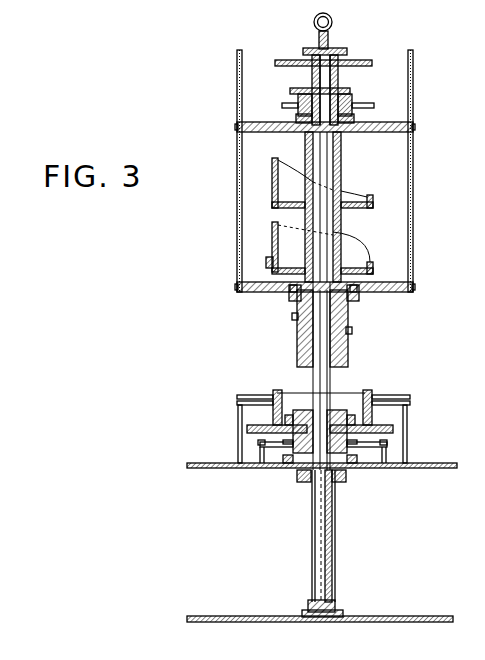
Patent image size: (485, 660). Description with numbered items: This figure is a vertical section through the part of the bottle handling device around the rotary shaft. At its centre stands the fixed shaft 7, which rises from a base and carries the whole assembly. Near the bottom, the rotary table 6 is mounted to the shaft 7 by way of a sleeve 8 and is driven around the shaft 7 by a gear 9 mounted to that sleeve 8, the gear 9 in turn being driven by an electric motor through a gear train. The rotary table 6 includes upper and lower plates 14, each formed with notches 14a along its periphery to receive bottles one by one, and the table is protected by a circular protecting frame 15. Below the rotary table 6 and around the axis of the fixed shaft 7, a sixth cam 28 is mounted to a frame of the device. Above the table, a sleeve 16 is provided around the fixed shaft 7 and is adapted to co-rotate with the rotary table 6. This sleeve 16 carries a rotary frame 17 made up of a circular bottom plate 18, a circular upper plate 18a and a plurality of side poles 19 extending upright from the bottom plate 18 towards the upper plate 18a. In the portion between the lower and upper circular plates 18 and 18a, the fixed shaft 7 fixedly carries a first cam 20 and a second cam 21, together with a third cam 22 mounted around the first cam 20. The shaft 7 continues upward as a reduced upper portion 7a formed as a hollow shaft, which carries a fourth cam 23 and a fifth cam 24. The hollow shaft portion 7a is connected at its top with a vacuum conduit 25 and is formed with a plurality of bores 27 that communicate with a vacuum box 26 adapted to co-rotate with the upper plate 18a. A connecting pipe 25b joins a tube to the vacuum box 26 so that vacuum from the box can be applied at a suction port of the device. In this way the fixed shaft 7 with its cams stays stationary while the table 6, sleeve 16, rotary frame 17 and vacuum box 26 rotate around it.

The rotary table 6 is at (395, 428).
The shaft 7 is at (333, 545).
The reduced upper portion 7a is at (339, 78).
The sleeve 8 is at (290, 455).
The gear 9 is at (305, 482).
The upper and lower plates 14 is at (372, 422).
The notches 14a is at (264, 422).
The circular protecting frame 15 is at (408, 397).
The sleeve 16 is at (299, 346).
The rotary frame 17 is at (413, 252).
The circular bottom plate 18 is at (378, 291).
The circular upper plate 18a is at (368, 133).
The side poles 19 is at (413, 190).
The first cam 20 is at (272, 242).
The second cam 21 is at (273, 190).
The third cam 22 is at (267, 263).
The fourth cam 23 is at (292, 89).
The fifth cam 24 is at (292, 62).
The vacuum conduit 25 is at (332, 18).
The connecting pipe 25b is at (375, 106).
The vacuum box 26 is at (353, 100).
The bores 27 is at (290, 106).
The sixth cam 28 is at (260, 443).